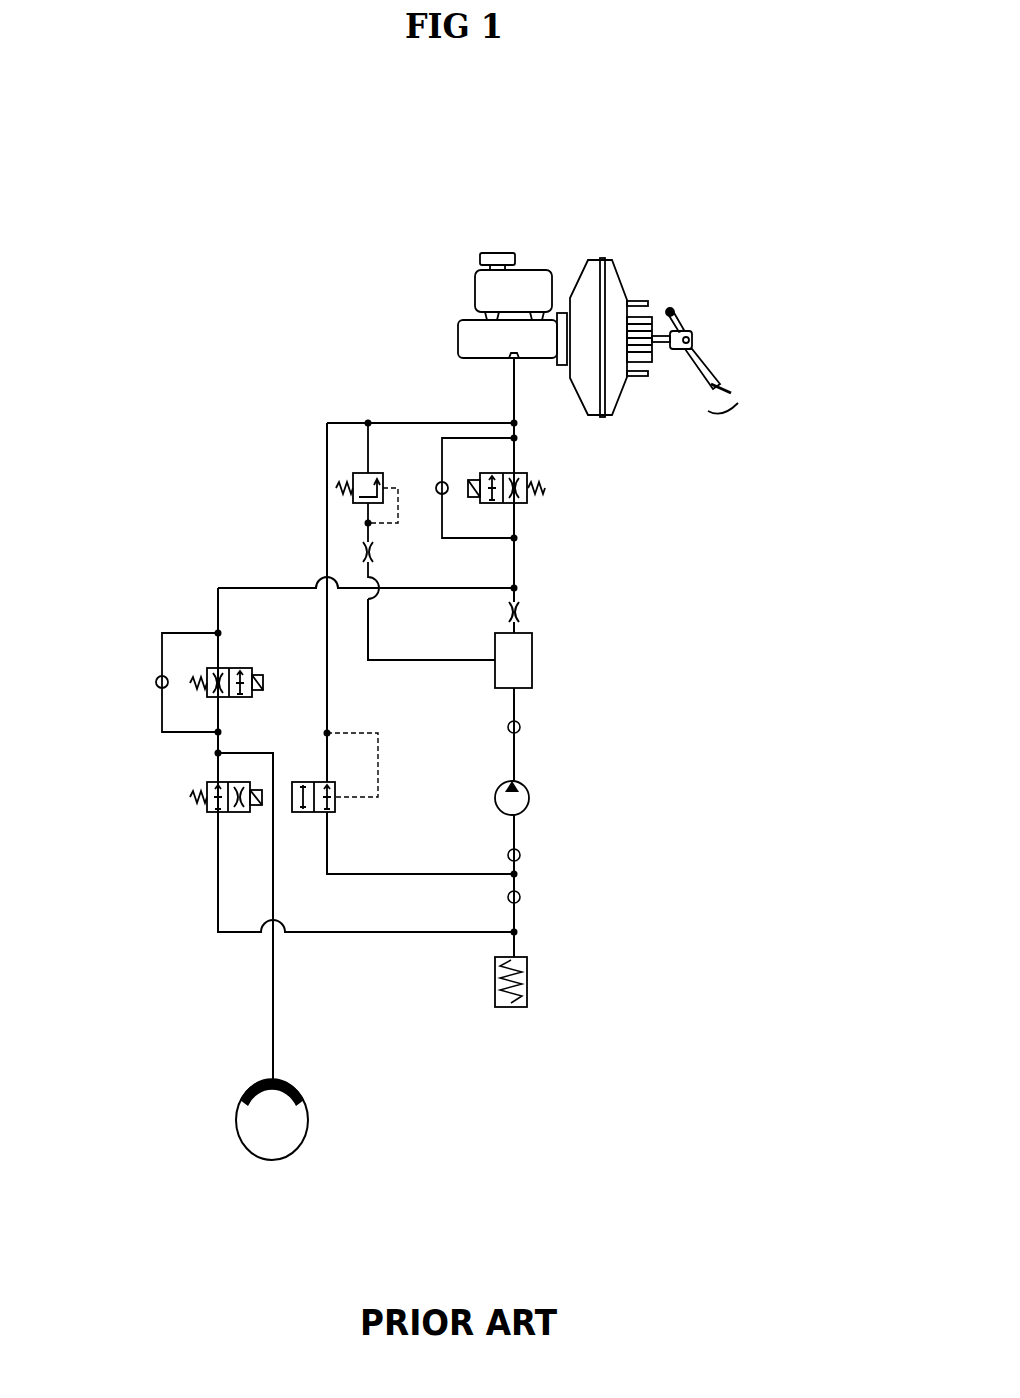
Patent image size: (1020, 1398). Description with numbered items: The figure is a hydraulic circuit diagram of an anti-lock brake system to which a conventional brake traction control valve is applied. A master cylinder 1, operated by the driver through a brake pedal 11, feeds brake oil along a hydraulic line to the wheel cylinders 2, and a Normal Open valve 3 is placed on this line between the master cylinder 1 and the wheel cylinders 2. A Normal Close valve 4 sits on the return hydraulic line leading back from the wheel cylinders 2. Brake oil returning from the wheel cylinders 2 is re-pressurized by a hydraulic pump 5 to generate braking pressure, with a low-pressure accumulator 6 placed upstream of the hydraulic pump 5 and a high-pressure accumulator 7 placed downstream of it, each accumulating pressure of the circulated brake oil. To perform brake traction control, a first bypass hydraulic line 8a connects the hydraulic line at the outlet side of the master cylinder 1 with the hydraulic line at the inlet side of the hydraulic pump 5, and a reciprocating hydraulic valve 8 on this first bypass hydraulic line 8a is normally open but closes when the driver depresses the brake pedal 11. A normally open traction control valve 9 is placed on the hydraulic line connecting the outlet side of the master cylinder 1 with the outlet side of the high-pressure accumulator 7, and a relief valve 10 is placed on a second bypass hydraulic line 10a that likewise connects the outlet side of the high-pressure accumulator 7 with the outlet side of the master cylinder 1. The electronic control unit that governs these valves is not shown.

The master cylinder 1 is at (460, 352).
The wheel cylinders 2 is at (305, 1105).
The Normal Open (NO) valve 3 is at (240, 668).
The Normal Close (NC) valve 4 is at (248, 782).
The hydraulic pump 5 is at (530, 794).
The low-pressure accumulator 6 is at (527, 983).
The high-pressure accumulator 7 is at (532, 658).
The reciprocating hydraulic valve 8 is at (325, 812).
The first bypass hydraulic line 8a is at (327, 682).
The traction control valve 9 is at (510, 473).
The relief valve 10 is at (371, 473).
The second bypass hydraulic line 10a is at (417, 660).
The brake pedal 11 is at (705, 371).